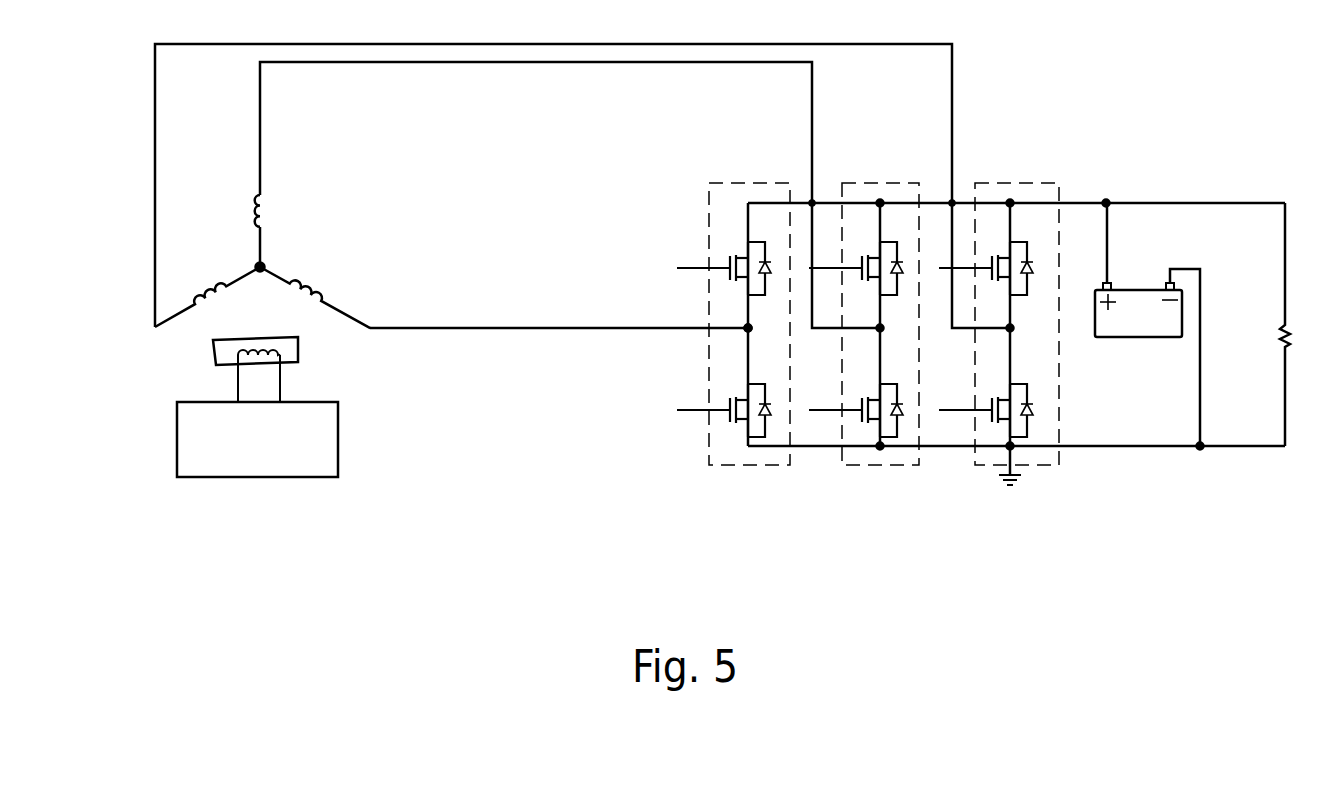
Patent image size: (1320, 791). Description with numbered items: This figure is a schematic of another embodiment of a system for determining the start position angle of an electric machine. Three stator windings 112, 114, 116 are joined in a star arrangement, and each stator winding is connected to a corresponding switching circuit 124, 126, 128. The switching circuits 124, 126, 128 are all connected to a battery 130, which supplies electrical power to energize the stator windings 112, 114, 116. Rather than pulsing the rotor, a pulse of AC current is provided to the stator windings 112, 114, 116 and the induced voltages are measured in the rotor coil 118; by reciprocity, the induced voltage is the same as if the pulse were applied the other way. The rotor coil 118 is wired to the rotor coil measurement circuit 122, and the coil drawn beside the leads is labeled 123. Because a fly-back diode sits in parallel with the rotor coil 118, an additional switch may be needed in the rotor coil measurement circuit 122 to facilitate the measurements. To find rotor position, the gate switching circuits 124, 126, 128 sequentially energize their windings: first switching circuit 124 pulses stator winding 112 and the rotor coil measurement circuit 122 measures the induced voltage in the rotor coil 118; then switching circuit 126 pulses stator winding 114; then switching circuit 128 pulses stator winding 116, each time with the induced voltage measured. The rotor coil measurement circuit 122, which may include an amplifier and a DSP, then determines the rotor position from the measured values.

The stator winding 112 is at (258, 212).
The stator winding 114 is at (210, 285).
The stator winding 116 is at (300, 285).
The rotor coil 118 is at (243, 353).
The rotor coil measurement circuit 122 is at (245, 477).
The rotor coil 123 is at (298, 350).
The switching circuit 124 is at (893, 183).
The switching circuit 126 is at (1017, 183).
The switching circuit 128 is at (738, 183).
The battery 130 is at (1150, 288).